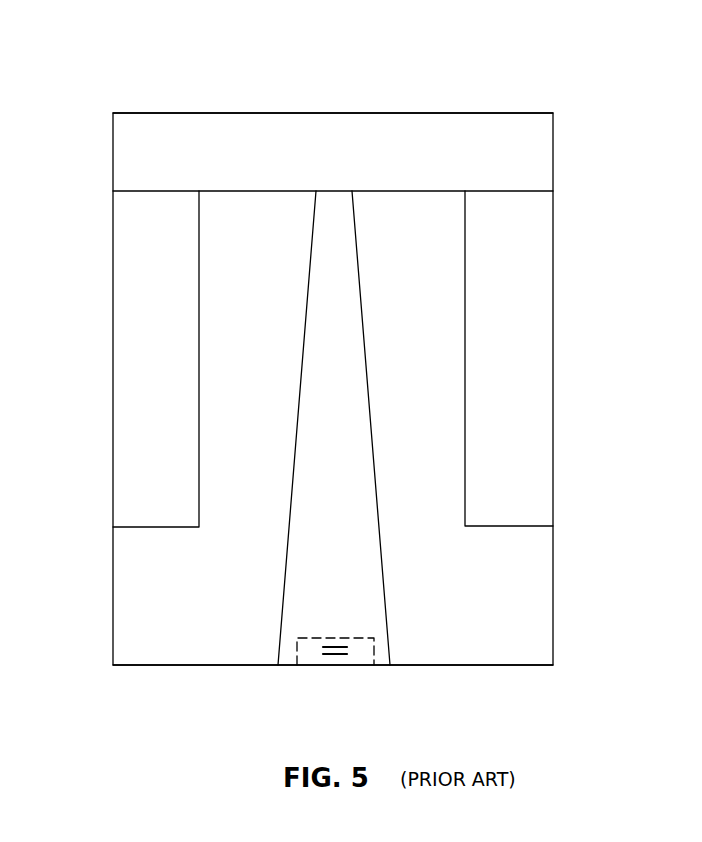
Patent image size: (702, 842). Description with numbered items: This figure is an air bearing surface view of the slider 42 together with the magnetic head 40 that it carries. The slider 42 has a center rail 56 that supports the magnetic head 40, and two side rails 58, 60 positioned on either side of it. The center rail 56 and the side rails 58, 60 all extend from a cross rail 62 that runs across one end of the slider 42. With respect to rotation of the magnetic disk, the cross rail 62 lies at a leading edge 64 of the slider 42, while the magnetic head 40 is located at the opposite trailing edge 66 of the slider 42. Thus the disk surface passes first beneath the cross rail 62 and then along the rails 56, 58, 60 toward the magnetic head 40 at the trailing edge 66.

The magnetic head 40 is at (313, 660).
The slider 42 is at (113, 615).
The center rail 56 is at (318, 302).
The side rail 58 is at (129, 270).
The side rail 60 is at (537, 270).
The cross rail 62 is at (254, 126).
The leading edge 64 is at (433, 112).
The trailing edge 66 is at (455, 667).